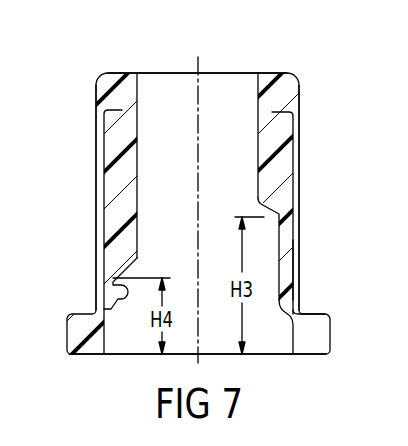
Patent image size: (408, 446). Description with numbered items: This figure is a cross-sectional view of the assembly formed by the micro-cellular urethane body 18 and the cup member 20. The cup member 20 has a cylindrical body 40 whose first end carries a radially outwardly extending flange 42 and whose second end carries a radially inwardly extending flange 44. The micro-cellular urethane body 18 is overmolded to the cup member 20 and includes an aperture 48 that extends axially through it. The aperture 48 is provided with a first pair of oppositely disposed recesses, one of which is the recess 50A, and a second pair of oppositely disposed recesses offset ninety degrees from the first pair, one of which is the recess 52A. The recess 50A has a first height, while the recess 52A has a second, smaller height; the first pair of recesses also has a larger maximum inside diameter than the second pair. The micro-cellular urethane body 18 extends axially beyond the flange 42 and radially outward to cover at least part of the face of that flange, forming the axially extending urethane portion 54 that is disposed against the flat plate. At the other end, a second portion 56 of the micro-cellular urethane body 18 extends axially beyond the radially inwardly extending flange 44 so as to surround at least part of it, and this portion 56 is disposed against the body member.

The micro-cellular urethane body 18 is at (275, 206).
The cup member 20 is at (298, 133).
The cylindrical body 40 is at (294, 250).
The radially outwardly extending flange 42 is at (323, 315).
The radially inwardly extending flange 44 is at (300, 99).
The aperture 48 is at (241, 82).
The first recess 50A is at (281, 272).
The second recess 52A is at (118, 286).
The axially extending micro-cellular urethane portion 54 is at (318, 356).
The second portion of micro-cellular urethane body 56 is at (267, 76).